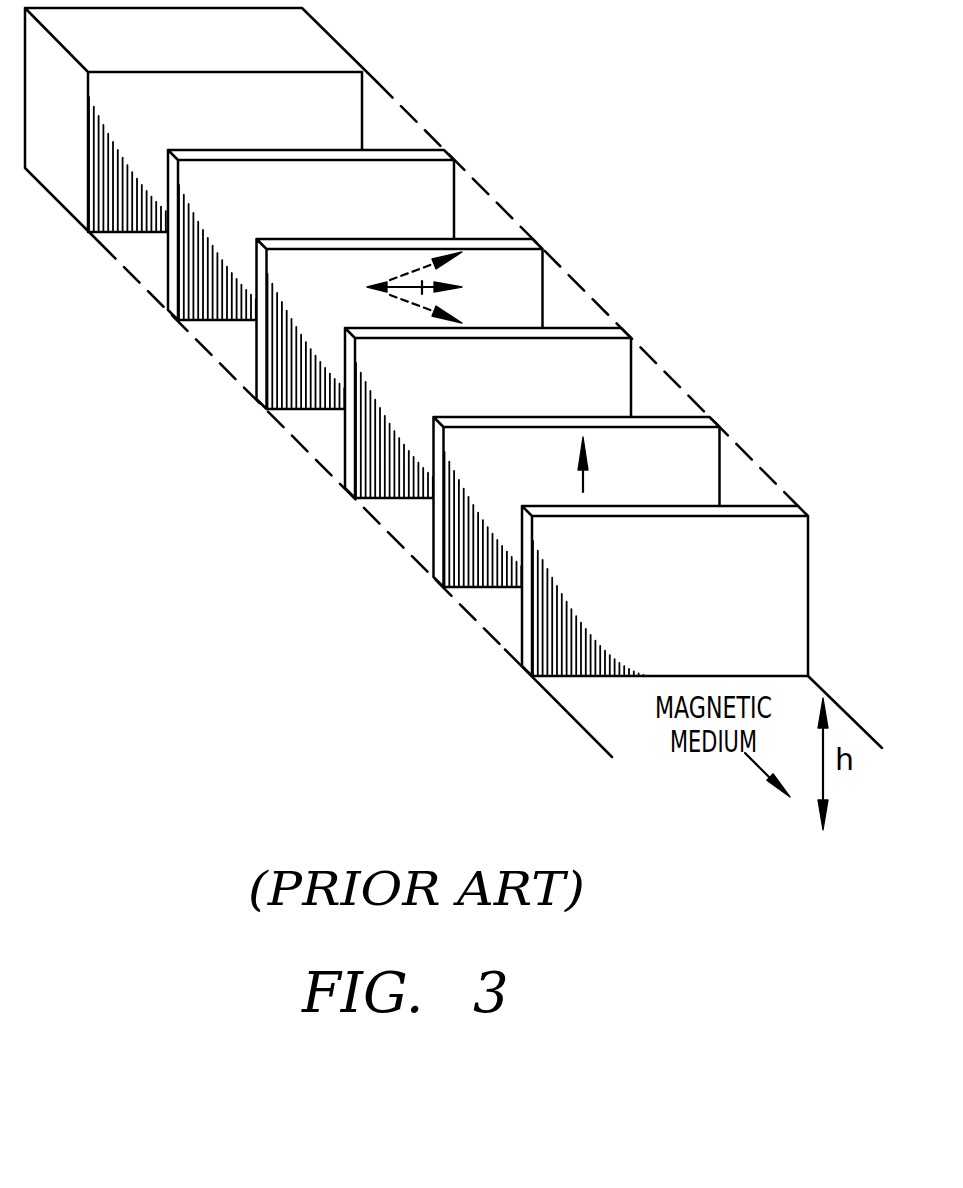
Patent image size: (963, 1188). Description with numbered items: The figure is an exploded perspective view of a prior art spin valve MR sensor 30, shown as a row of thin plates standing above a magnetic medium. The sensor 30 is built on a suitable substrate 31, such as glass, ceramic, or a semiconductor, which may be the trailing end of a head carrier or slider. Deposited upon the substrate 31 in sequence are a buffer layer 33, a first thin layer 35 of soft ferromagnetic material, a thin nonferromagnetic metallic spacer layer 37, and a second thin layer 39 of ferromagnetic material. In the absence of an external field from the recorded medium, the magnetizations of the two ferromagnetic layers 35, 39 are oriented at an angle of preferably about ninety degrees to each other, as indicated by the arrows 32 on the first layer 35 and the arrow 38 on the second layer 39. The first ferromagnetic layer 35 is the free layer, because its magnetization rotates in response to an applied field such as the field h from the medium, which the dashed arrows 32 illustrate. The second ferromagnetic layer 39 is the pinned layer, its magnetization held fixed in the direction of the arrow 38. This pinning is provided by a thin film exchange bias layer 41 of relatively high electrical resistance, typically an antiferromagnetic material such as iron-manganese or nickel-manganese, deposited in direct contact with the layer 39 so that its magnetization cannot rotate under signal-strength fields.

The spin valve MR sensor 30 is at (207, 445).
The substrate 31 is at (314, 39).
The arrows 32 is at (398, 285).
The buffer layer 33 is at (423, 148).
The first thin layer of soft ferromagnetic material 35 is at (504, 238).
The nonferromagnetic metallic spacer layer 37 is at (575, 325).
The arrow 38 is at (590, 447).
The second thin layer of ferromagnetic material 39 is at (685, 414).
The exchange bias layer 41 is at (794, 504).